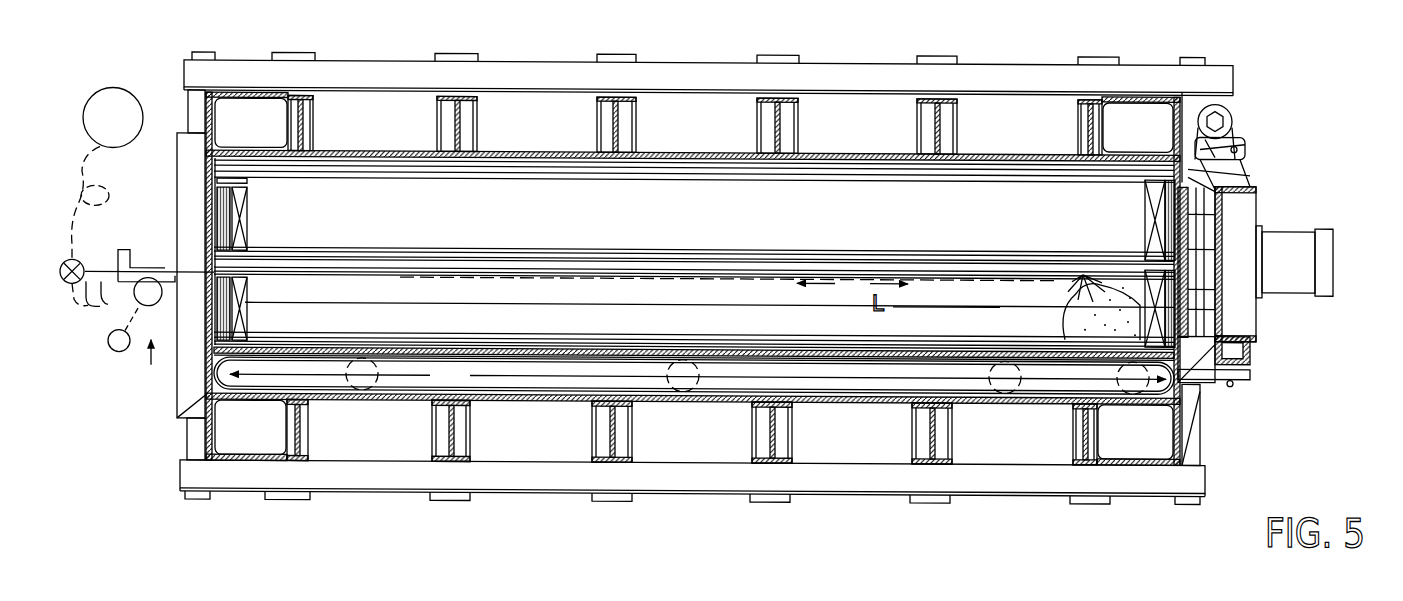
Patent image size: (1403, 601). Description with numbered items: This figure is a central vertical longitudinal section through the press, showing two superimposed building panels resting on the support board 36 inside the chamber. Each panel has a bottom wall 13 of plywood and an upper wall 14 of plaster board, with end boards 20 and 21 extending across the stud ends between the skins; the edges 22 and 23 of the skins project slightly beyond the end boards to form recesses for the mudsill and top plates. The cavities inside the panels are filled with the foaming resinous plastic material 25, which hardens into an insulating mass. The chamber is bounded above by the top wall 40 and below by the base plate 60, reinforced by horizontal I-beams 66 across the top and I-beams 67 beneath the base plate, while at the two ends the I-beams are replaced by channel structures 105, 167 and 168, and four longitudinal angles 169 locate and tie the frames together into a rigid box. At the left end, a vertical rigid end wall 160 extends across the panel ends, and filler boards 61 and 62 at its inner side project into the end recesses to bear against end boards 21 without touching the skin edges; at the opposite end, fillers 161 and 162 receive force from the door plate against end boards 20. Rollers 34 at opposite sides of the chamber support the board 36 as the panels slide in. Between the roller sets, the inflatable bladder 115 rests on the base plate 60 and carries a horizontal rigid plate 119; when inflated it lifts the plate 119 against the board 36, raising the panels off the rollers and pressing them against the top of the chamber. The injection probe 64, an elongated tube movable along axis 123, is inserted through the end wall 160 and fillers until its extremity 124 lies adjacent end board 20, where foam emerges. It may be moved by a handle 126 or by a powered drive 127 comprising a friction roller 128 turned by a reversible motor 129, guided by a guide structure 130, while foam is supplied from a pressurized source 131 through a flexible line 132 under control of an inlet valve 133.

The bottom wall 13 is at (710, 248).
The upper wall 14 is at (720, 178).
The end board 20 is at (1145, 196).
The end board 21 is at (250, 200).
The skin edge 22 is at (1252, 195).
The skin edge 23 is at (206, 168).
The foaming resinous plastic material 25 is at (1058, 313).
The rollers 34 is at (1015, 391).
The support board 36 is at (820, 345).
The top wall 40 is at (837, 151).
The base plate 60 is at (828, 400).
The filler board 61 is at (224, 222).
The filler board 62 is at (224, 318).
The injection probe 64 is at (597, 276).
The I-beams 66 is at (437, 120).
The I-beams 67 is at (752, 427).
The channel structure 105 is at (1172, 113).
The inflatable bladder 115 is at (515, 364).
The rigid rectangular plate 119 is at (866, 350).
The axis 123 is at (445, 277).
The probe extremity 124 is at (1068, 277).
The handle 126 is at (96, 308).
The powered drive 127 is at (150, 364).
The friction roller 128 is at (234, 293).
The reversible motor 129 is at (108, 352).
The guide structure 130 is at (139, 256).
The pressurized source 131 is at (110, 88).
The flexible line 132 is at (92, 152).
The inlet valve 133 is at (115, 245).
The end wall 160 is at (206, 394).
The filler 161 is at (1165, 218).
The filler 162 is at (1160, 320).
The channel structure 167 is at (216, 110).
The channel structure 168 is at (183, 445).
The longitudinal angles 169 is at (520, 62).